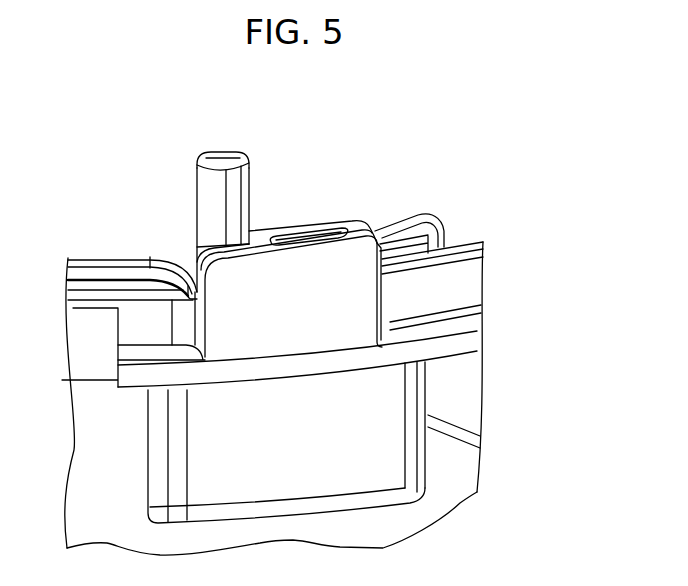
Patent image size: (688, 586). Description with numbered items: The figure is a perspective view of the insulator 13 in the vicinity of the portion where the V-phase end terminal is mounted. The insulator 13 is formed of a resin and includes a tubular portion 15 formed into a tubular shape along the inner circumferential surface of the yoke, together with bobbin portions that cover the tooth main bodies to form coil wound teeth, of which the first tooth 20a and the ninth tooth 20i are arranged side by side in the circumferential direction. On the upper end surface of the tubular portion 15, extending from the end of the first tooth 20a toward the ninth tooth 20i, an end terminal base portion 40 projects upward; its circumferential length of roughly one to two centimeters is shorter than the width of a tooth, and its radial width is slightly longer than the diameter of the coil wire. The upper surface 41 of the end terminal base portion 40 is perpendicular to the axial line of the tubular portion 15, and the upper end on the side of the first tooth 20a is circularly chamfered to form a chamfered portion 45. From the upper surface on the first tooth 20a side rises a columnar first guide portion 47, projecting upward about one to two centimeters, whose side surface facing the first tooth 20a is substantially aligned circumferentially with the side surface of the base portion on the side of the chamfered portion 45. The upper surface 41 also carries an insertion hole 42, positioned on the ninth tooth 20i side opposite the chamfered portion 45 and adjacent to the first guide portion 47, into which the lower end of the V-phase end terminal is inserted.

The insulator 13 is at (480, 290).
The tubular portion 15 is at (464, 253).
The ninth tooth 20i is at (403, 240).
The first tooth 20a is at (97, 280).
The end terminal base portion 40 is at (293, 287).
The upper surface 41 is at (349, 230).
The insertion hole 42 is at (308, 230).
The chamfered portion 45 is at (203, 256).
The first guide portion 47 is at (218, 151).